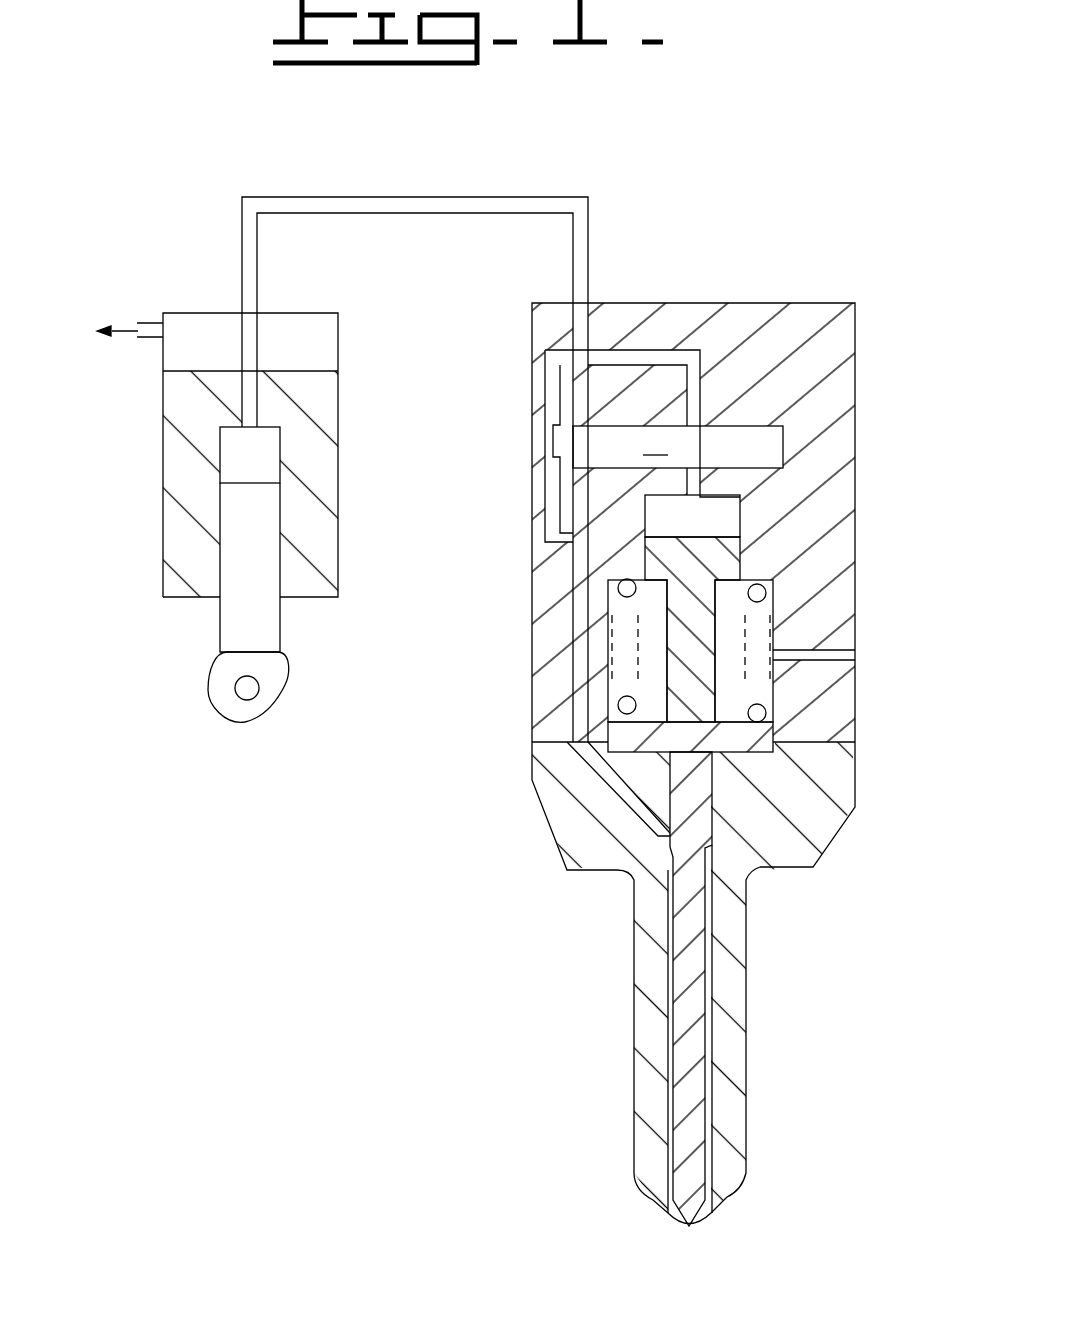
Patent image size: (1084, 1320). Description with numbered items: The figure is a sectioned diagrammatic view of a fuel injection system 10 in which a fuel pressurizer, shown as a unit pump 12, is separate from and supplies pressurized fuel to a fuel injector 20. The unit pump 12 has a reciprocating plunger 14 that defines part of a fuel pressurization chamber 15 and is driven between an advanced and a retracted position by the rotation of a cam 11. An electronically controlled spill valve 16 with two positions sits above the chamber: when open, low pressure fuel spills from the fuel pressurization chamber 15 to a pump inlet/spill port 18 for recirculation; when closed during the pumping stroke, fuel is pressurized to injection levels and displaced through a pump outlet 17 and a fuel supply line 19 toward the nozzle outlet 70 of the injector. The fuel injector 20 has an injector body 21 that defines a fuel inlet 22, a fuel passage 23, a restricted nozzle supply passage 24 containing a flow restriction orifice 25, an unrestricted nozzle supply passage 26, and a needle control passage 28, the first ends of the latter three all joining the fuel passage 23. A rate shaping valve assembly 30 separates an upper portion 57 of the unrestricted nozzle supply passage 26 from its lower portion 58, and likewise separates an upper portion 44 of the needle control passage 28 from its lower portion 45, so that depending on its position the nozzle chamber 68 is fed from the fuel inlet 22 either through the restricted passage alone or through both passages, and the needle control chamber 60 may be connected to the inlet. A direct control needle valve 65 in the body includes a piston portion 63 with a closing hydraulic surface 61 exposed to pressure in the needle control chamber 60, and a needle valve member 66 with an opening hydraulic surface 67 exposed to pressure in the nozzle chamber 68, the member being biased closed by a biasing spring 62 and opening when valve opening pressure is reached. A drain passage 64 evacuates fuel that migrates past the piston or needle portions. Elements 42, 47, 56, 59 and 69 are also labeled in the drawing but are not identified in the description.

The fuel injection system 10 is at (315, 913).
The cam 11 is at (266, 724).
The unit pump 12 is at (150, 535).
The reciprocating plunger 14 is at (281, 642).
The fuel pressurization chamber 15 is at (278, 452).
The spill valve 16 is at (336, 344).
The pump outlet 17 is at (258, 310).
The pump inlet/spill port 18 is at (163, 337).
The fuel supply line 19 is at (240, 254).
The fuel injector 20 is at (515, 652).
The injector body 21 is at (855, 550).
The fuel inlet 22 is at (588, 303).
The fuel passage 23 is at (590, 343).
The restricted nozzle supply passage 24 is at (548, 372).
The flow restriction orifice 25 is at (530, 432).
The unrestricted nozzle supply passage 26 is at (700, 320).
The needle control passage 28 is at (795, 320).
The rate shaping valve assembly 30 is at (678, 447).
The passage 42 is at (705, 410).
The upper portion 44 is at (700, 372).
The lower portion 45 is at (745, 497).
The valve member 47 is at (790, 455).
The port 56 is at (572, 470).
The upper portion 57 is at (560, 410).
The lower portion 58 is at (546, 537).
The port 59 is at (560, 500).
The needle control chamber 60 is at (645, 527).
The closing hydraulic surface 61 is at (740, 523).
The biasing spring 62 is at (773, 616).
The piston portion 63 is at (607, 582).
The drain passage 64 is at (815, 655).
The direct control needle valve 65 is at (725, 798).
The needle valve member 66 is at (710, 877).
The opening hydraulic surface 67 is at (662, 858).
The nozzle chamber 68 is at (730, 858).
The needle 69 is at (668, 933).
The nozzle outlet 70 is at (670, 1215).